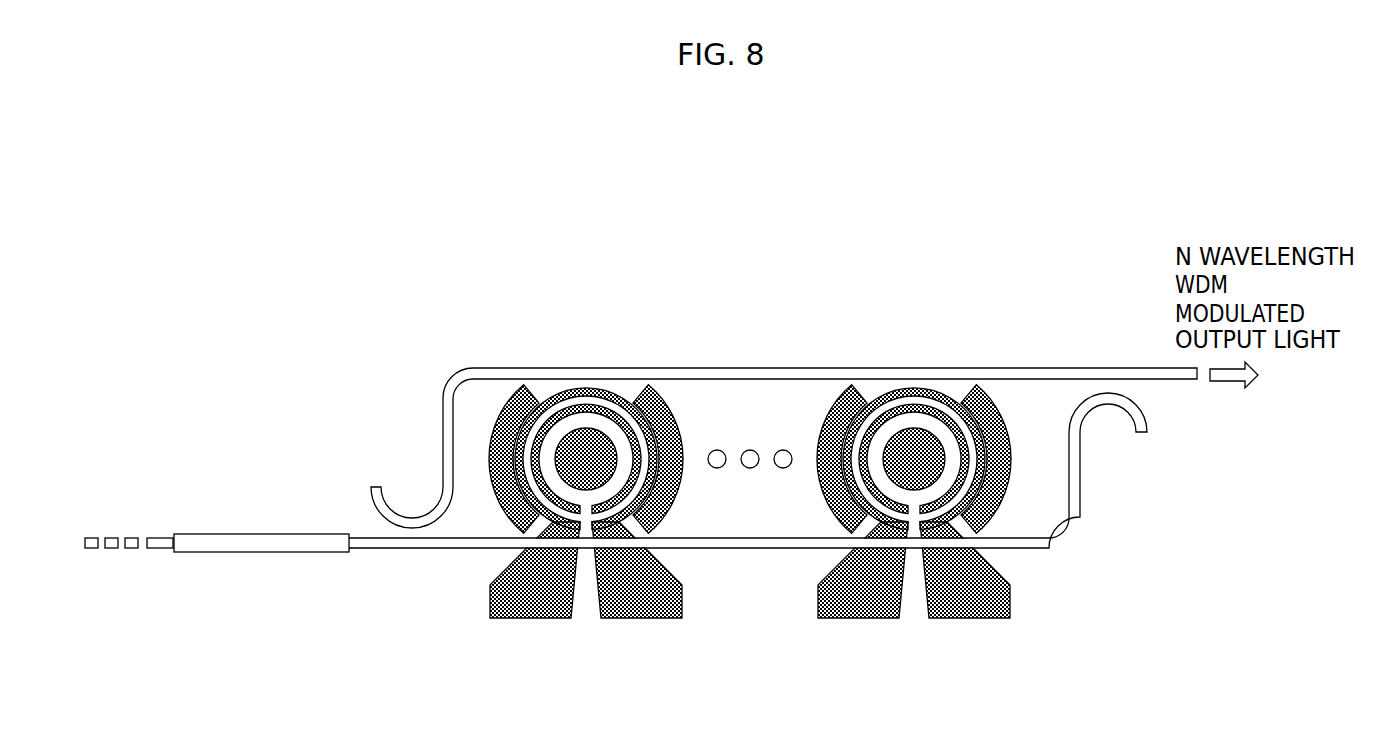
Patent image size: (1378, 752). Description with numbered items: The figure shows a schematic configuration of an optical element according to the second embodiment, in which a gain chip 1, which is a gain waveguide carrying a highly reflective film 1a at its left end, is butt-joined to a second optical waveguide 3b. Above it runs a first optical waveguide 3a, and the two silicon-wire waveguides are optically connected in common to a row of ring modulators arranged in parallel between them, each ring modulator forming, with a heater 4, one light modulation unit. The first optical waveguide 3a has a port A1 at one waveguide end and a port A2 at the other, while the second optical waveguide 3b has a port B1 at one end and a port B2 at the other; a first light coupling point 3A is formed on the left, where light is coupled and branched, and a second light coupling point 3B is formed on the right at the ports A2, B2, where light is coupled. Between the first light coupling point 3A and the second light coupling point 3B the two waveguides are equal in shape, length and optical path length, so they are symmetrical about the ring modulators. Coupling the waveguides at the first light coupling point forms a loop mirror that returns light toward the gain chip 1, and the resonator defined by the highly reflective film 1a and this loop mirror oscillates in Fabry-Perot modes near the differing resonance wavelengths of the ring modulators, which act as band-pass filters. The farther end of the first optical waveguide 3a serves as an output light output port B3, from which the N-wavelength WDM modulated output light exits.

The gain chip 1 is at (268, 533).
The highly reflective film 1a is at (117, 527).
The first optical waveguide 3a is at (742, 367).
The second optical waveguide 3b is at (756, 549).
The first light coupling point 3A is at (400, 558).
The second light coupling point 3B is at (1104, 359).
The heater 4 is at (667, 598).
The port A1 is at (425, 515).
The port A2 is at (1035, 367).
The port B1 is at (421, 550).
The port B2 is at (1081, 434).
The output light output port B3 is at (1200, 381).